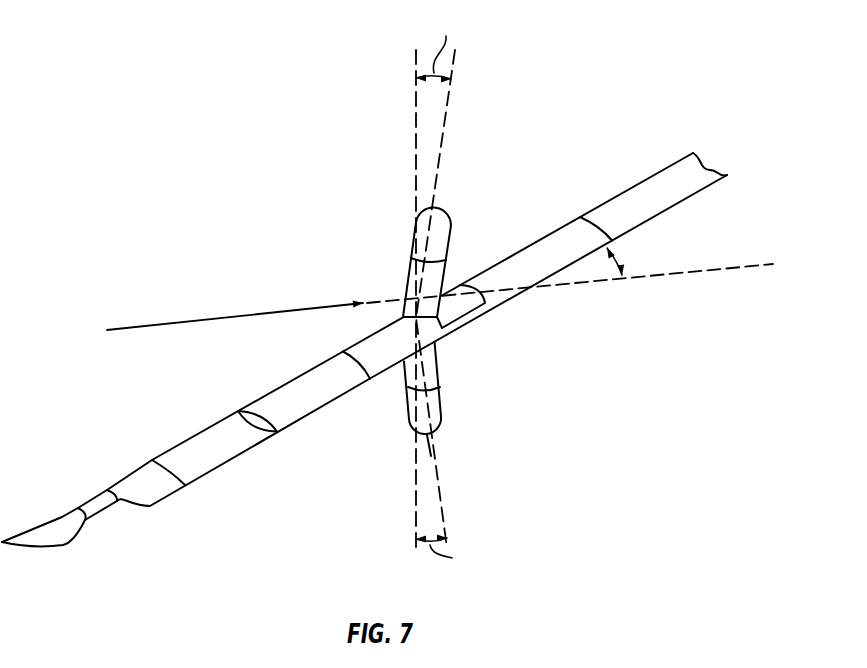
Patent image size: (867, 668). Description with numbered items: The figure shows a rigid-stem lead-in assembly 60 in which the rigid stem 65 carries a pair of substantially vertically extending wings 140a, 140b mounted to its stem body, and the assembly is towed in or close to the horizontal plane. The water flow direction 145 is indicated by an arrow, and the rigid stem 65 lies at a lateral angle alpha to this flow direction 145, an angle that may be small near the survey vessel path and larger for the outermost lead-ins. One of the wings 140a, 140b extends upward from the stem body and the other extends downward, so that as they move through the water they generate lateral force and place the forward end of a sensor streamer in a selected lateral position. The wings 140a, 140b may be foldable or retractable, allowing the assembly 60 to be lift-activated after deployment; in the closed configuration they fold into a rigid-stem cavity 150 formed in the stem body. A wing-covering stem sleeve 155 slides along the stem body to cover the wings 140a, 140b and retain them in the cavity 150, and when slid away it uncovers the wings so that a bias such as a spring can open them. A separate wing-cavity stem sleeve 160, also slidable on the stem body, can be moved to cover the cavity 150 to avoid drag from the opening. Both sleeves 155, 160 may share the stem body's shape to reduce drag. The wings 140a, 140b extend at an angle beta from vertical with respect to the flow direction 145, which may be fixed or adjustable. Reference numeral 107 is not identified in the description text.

The rigid-stem lead-in assembly 60 is at (584, 384).
The rigid stem 65 is at (309, 422).
The second tube 107 is at (668, 212).
The wing 140a is at (413, 245).
The wing 140b is at (446, 406).
The flow direction 145 is at (180, 321).
The rigid-stem cavity 150 is at (452, 306).
The wing-covering stem sleeve 155 is at (272, 386).
The wing-cavity stem sleeve 160 is at (548, 233).